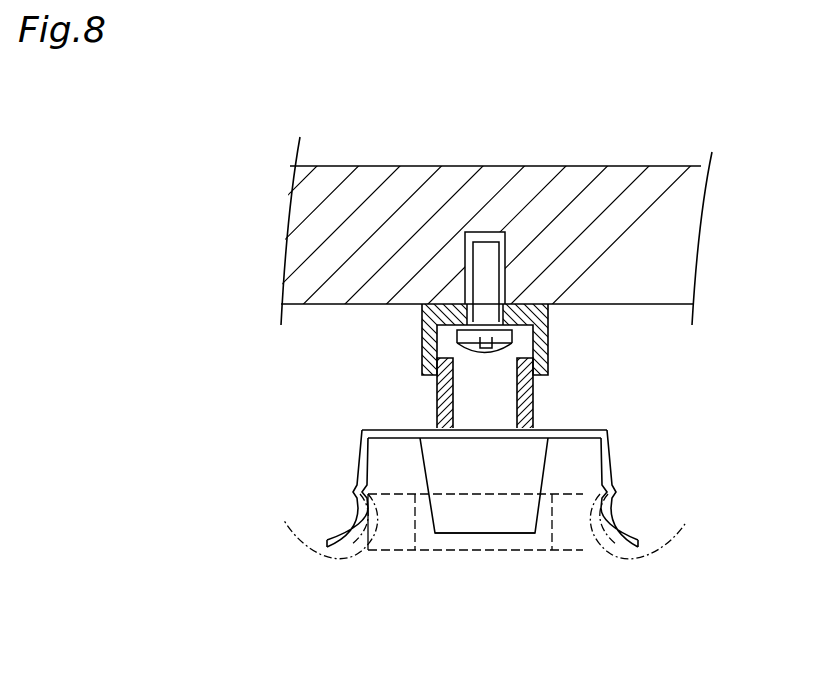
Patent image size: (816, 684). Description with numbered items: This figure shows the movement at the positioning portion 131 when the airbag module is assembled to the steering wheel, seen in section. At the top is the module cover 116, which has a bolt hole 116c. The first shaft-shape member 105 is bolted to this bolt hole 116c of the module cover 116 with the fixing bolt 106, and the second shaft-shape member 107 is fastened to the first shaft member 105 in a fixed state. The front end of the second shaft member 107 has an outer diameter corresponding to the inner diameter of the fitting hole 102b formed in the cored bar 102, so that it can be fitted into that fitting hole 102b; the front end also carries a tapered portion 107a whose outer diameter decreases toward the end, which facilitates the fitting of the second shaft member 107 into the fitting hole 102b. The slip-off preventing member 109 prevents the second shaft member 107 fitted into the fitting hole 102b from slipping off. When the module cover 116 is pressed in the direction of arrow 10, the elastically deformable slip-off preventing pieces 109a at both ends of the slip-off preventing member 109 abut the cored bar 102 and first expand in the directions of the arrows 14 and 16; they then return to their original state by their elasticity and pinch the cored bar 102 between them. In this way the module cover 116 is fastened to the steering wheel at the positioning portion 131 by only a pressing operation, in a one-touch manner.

The module cover 116 is at (532, 177).
The bolt hole 116c is at (465, 233).
The first shaft-shape member 105 is at (414, 324).
The fixing bolt 106 is at (492, 342).
The second shaft-shape member 107 is at (543, 414).
The tapered portion 107a is at (577, 556).
The slip-off preventing member 109 is at (351, 424).
The slip-off preventing pieces 109a is at (355, 534).
The positioning portion 131 is at (478, 554).
The cored bar 102 is at (583, 552).
The fitting hole 102b is at (415, 550).
The downward direction 10 is at (644, 360).
The arrow 14 is at (692, 577).
The arrow 16 is at (300, 568).